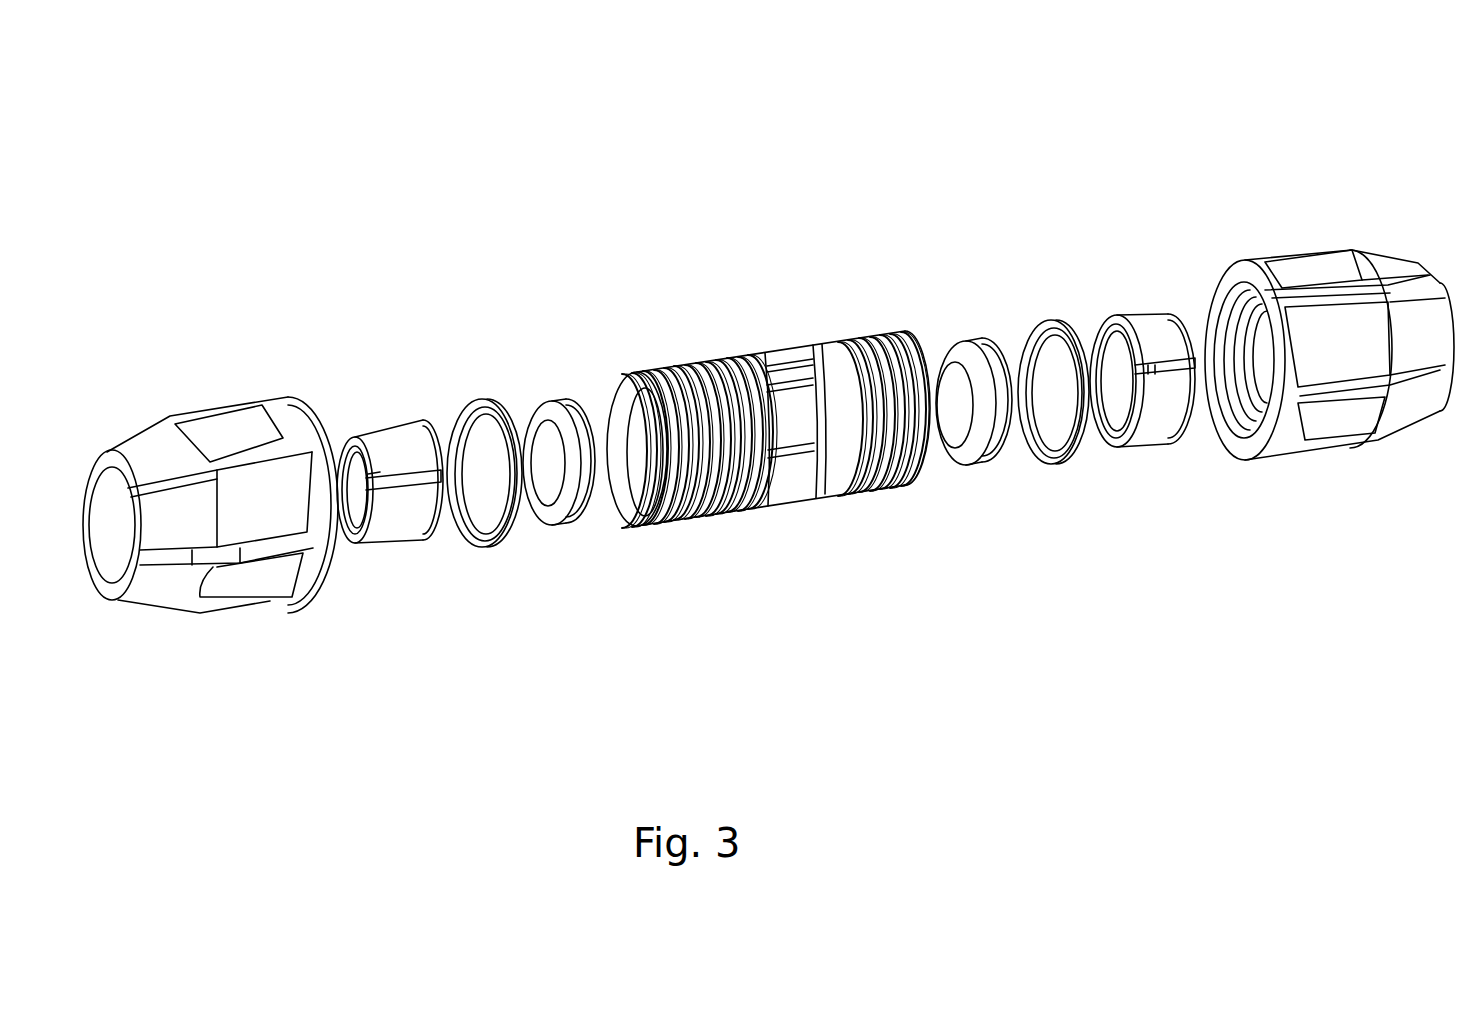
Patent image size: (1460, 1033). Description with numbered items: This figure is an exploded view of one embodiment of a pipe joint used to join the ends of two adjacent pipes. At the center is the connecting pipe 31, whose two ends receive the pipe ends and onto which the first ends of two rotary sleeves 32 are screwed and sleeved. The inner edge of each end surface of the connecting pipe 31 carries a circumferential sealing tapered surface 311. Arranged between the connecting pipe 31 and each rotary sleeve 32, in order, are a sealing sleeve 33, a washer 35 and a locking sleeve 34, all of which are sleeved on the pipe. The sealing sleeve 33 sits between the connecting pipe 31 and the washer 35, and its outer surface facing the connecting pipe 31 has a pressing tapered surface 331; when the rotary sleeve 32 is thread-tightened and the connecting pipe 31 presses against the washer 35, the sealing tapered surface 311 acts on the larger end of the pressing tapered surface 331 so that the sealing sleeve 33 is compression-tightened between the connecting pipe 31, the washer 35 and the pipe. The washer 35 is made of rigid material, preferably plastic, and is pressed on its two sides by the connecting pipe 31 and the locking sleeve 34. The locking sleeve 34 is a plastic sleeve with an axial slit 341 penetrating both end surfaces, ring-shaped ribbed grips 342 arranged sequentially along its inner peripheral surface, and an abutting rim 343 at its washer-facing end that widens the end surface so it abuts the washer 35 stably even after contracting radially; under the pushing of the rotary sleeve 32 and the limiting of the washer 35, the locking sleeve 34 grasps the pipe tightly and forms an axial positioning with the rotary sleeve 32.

The connecting pipe 31 is at (768, 436).
The sealing tapered surface 311 is at (638, 503).
The rotary sleeve 32 is at (173, 508).
The sealing sleeve 33 is at (756, 424).
The pressing tapered surface 331 is at (597, 477).
The locking sleeve 34 is at (805, 430).
The slit 341 is at (408, 482).
The ribbed grip 342 is at (368, 518).
The abutting rim 343 is at (435, 520).
The washer 35 is at (463, 410).